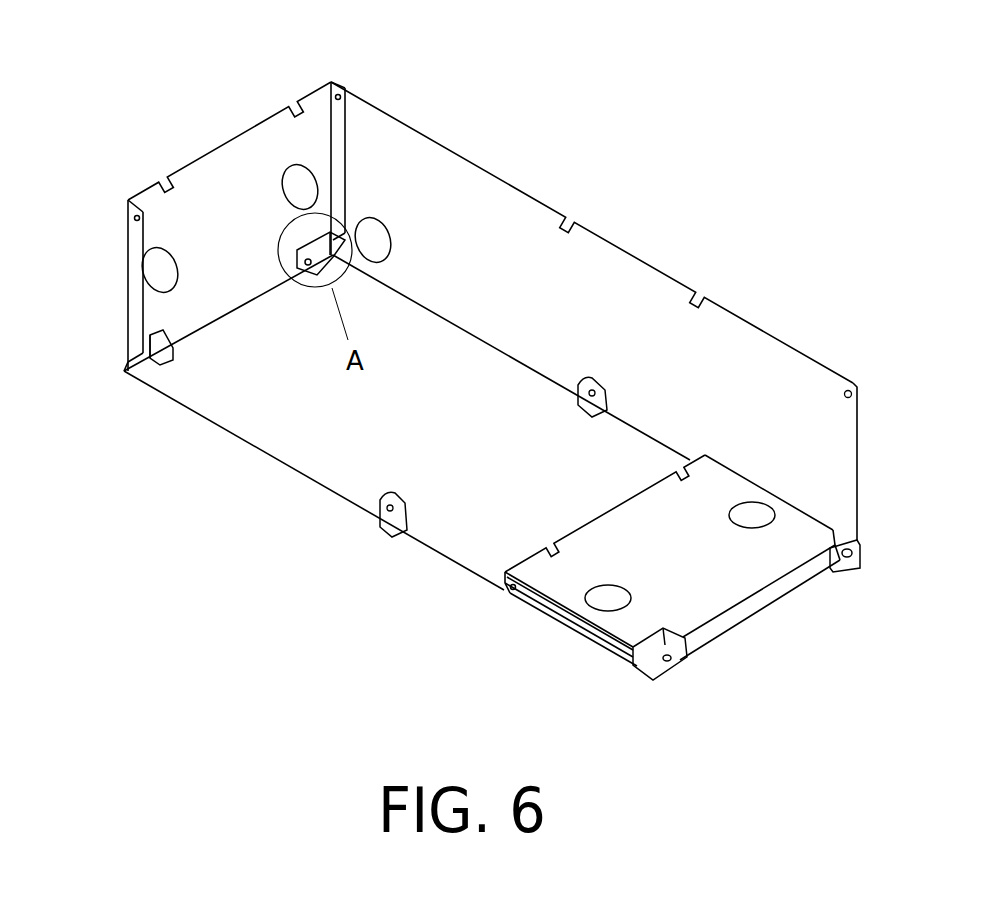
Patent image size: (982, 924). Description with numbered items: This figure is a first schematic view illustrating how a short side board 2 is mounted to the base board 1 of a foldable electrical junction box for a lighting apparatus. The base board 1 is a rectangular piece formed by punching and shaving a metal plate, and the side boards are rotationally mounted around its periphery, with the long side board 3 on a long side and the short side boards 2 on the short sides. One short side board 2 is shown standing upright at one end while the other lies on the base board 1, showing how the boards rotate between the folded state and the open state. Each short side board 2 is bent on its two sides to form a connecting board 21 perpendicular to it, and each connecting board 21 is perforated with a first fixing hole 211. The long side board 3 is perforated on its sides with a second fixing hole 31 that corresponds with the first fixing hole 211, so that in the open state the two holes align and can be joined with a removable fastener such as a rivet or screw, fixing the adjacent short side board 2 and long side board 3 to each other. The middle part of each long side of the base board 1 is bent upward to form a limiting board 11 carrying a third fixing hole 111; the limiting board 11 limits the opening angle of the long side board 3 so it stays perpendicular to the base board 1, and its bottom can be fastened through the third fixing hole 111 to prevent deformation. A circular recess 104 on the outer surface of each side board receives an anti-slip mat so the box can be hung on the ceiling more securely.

The base board 1 is at (322, 432).
The short side board 2 is at (227, 162).
The long side board 3 is at (742, 372).
The limiting board 11 is at (600, 402).
The connecting board 21 is at (342, 137).
The second fixing hole 31 is at (851, 388).
The circular recess 104 is at (300, 183).
The third fixing hole 111 is at (580, 395).
The first fixing hole 211 is at (338, 95).